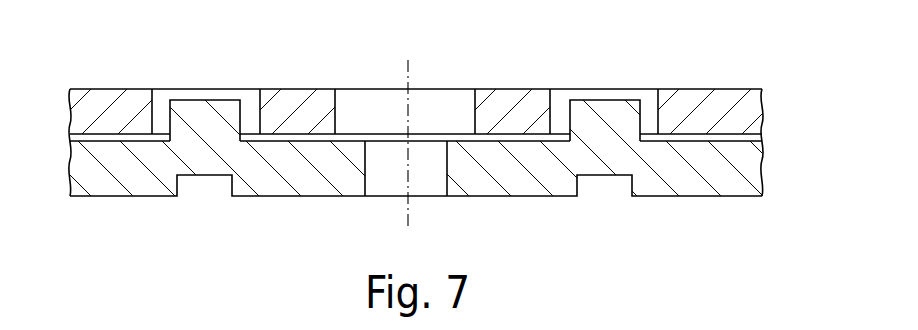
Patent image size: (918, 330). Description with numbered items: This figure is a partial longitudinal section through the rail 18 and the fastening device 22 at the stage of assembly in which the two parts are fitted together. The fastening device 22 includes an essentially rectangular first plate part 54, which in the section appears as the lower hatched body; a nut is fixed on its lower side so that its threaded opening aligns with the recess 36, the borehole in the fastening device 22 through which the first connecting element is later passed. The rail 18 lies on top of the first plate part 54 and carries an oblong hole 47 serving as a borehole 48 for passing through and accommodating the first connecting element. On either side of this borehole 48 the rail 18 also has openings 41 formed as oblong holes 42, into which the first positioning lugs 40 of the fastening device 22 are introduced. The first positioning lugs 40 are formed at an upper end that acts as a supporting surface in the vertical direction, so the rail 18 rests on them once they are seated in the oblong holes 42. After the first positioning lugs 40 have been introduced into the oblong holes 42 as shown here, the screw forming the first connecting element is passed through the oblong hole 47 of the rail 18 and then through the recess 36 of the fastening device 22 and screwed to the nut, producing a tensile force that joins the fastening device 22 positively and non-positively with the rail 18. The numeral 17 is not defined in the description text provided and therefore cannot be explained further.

The first plate component 17 is at (422, 105).
The rail 18 is at (742, 120).
The fastening device 22 is at (404, 182).
The first plate part 54 is at (738, 180).
The recess 36 is at (423, 177).
The first positioning lugs 40 is at (200, 113).
The openings 41 is at (475, 74).
The oblong holes 42 is at (250, 117).
The oblong hole 47 is at (416, 74).
The borehole 48 is at (435, 120).